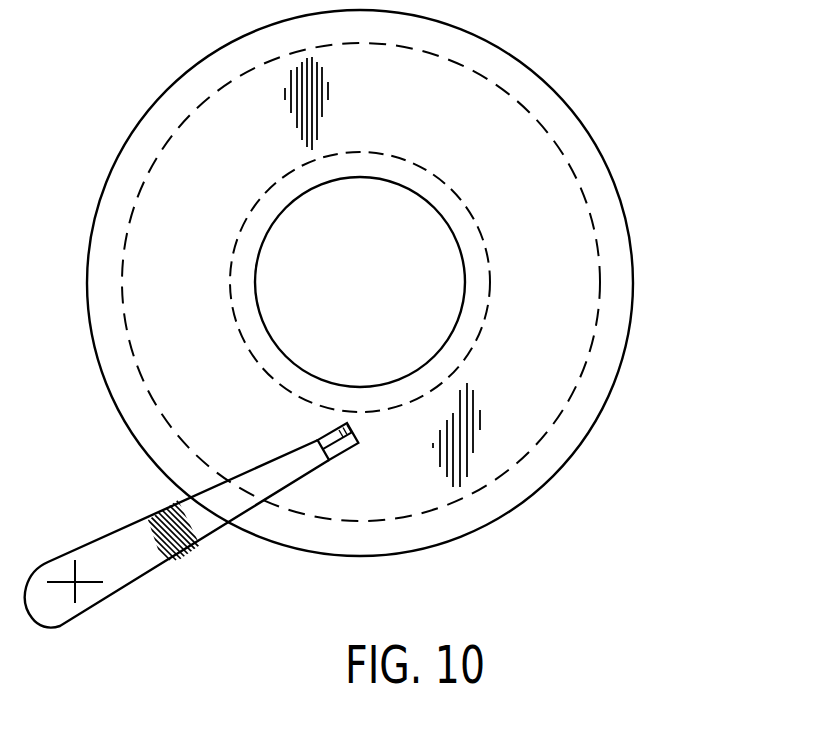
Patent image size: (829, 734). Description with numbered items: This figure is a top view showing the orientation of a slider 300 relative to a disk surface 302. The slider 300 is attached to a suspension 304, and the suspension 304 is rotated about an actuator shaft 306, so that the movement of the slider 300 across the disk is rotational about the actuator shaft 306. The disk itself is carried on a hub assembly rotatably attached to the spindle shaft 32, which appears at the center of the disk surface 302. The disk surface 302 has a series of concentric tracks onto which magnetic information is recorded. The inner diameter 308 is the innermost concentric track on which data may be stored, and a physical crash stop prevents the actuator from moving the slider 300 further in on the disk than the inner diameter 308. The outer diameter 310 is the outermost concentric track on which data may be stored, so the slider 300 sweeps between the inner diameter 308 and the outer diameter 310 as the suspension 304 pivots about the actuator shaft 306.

The disk surface 302 is at (553, 338).
The outer diameter 310 is at (499, 83).
The inner diameter 308 is at (430, 172).
The spindle shaft 32 is at (464, 290).
The suspension 304 is at (287, 468).
The actuator shaft 306 is at (80, 587).
The slider 300 is at (352, 446).